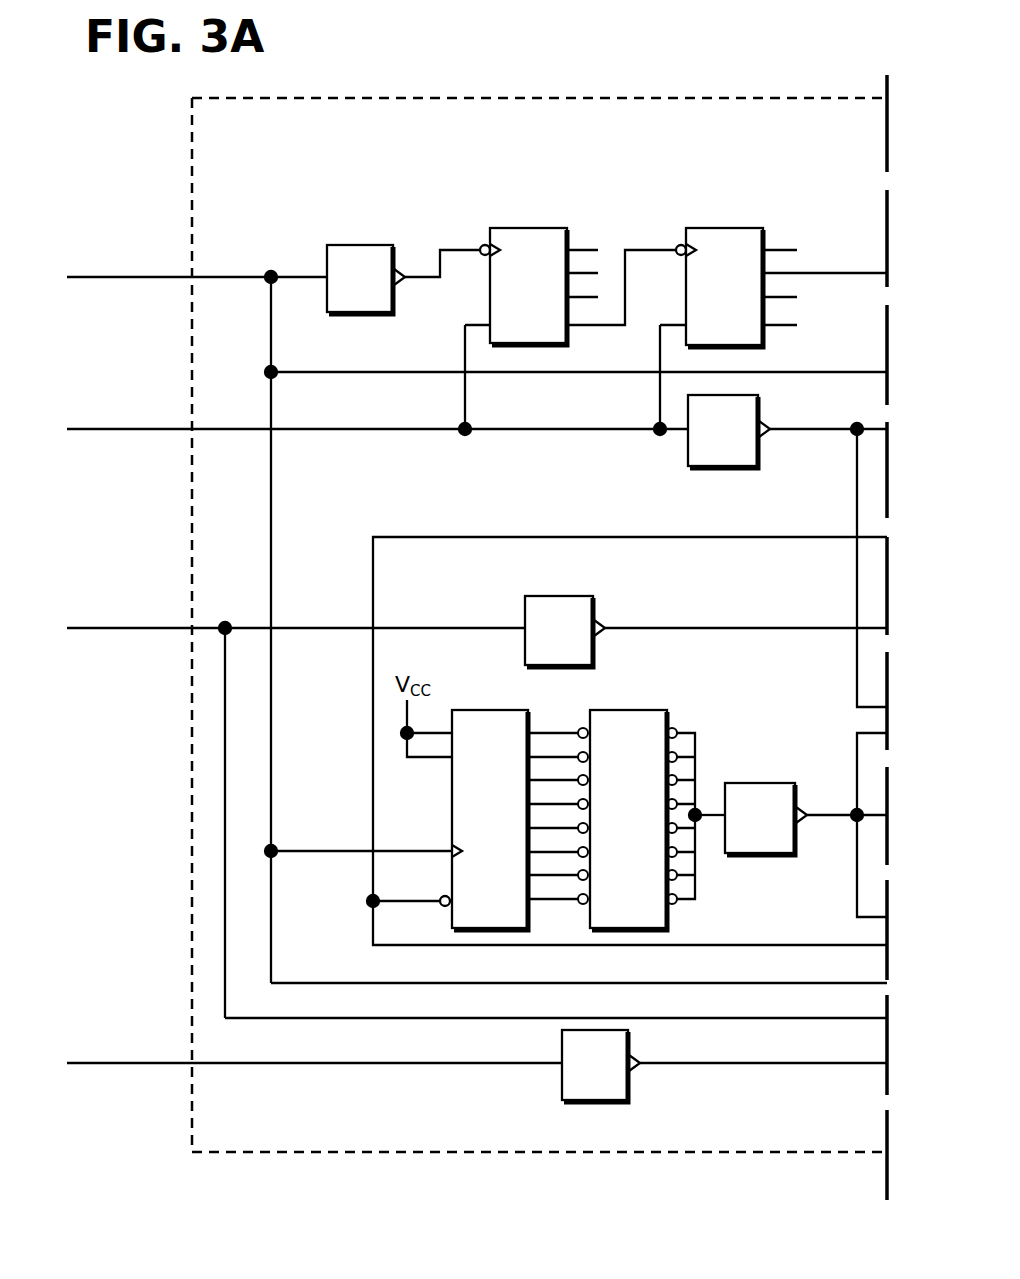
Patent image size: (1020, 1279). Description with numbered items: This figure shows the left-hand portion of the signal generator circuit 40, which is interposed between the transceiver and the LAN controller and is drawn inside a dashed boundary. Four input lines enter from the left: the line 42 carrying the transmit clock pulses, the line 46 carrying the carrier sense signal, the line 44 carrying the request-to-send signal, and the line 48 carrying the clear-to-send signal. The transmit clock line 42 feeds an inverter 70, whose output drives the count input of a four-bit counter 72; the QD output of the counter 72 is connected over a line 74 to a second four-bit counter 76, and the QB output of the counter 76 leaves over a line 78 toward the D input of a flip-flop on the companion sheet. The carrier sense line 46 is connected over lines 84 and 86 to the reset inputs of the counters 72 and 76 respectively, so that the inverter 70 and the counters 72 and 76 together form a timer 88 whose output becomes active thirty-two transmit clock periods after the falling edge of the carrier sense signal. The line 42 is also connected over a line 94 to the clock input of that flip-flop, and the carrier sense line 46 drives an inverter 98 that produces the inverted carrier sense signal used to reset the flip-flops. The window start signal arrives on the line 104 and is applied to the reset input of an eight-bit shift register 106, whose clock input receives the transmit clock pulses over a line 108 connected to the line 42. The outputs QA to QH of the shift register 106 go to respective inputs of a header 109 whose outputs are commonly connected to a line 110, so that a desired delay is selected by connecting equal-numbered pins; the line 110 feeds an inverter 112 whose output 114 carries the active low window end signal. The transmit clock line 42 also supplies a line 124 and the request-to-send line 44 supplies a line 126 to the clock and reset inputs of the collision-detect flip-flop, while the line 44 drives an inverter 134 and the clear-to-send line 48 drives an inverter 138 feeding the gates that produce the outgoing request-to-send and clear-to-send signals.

The signal generator circuit 40 is at (610, 98).
The input line 42 is at (150, 277).
The input line 44 is at (150, 628).
The input line 46 is at (150, 429).
The input line 48 is at (158, 1063).
The inverter 70 is at (362, 245).
The 4-bit counter 72 is at (535, 228).
The line 74 is at (634, 250).
The 4-bit counter 76 is at (745, 228).
The line 78 is at (808, 273).
The line 84 is at (465, 325).
The line 86 is at (661, 325).
The timer 88 is at (640, 243).
The line 94 is at (795, 372).
The inverter 98 is at (762, 438).
The output line 104 is at (752, 537).
The 8-bit shift register 106 is at (494, 712).
The line 108 is at (330, 851).
The header 109 is at (640, 712).
The line 110 is at (708, 815).
The inverter 112 is at (745, 783).
The output line 114 is at (822, 815).
The line 124 is at (760, 983).
The line 126 is at (760, 1018).
The inverter 134 is at (560, 596).
The inverter 138 is at (632, 1082).